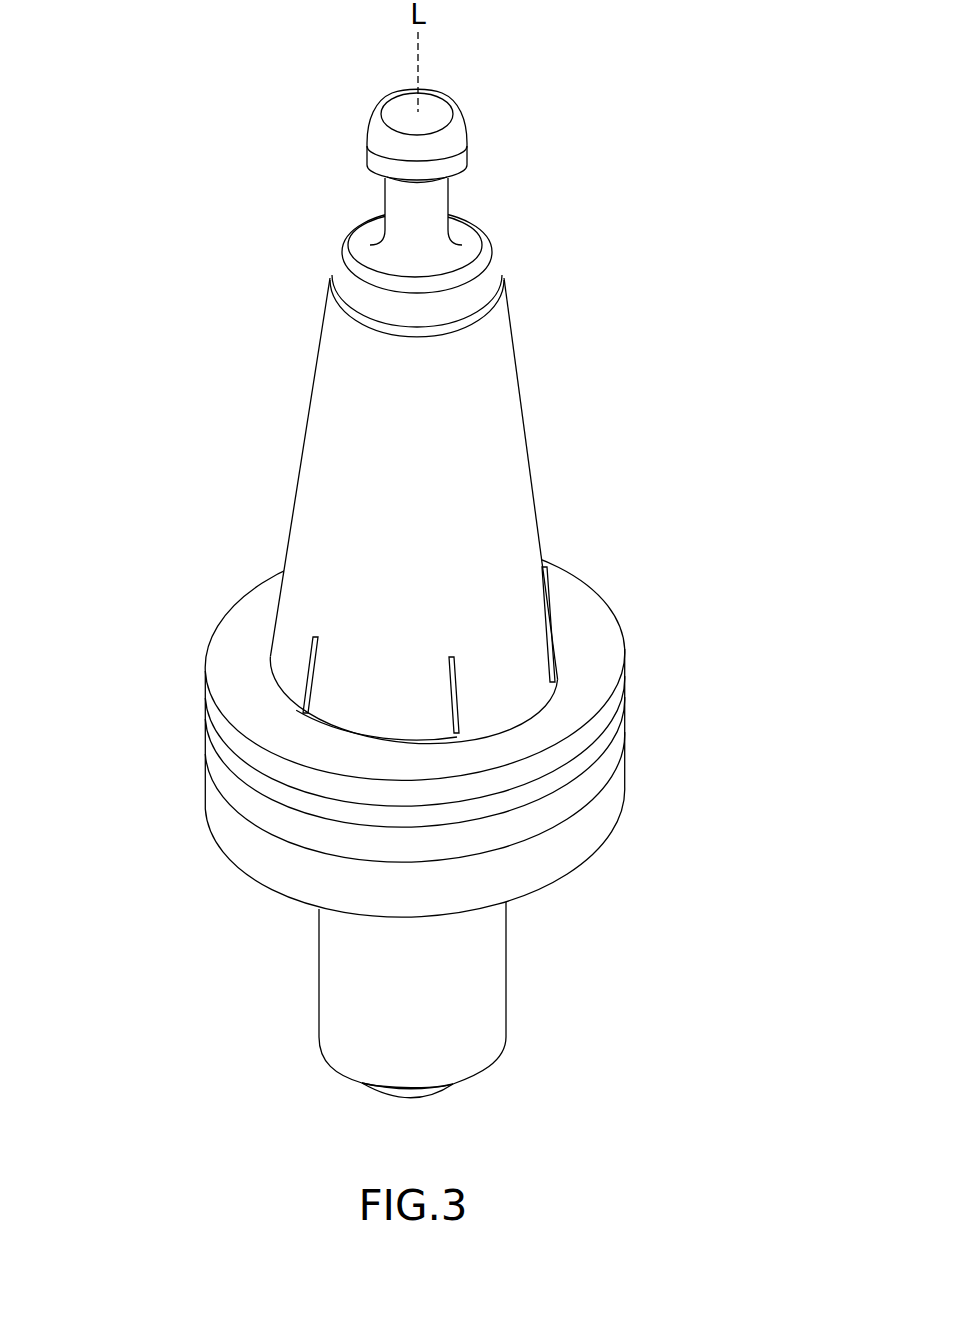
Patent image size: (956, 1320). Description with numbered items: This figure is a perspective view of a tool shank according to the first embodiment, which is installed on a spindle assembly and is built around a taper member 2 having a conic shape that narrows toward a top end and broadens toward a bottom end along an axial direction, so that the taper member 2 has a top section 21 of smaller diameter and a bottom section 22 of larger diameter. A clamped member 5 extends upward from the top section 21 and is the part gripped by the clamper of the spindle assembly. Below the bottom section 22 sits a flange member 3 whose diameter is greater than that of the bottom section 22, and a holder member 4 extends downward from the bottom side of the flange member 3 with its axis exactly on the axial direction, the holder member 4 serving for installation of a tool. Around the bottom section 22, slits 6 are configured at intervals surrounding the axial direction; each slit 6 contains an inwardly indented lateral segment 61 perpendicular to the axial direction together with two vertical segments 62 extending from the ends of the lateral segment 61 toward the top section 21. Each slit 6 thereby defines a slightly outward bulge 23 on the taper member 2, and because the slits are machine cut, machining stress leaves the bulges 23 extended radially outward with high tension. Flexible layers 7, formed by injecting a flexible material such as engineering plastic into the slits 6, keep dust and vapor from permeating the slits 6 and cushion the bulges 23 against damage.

The taper member 2 is at (521, 377).
The top section 21 is at (502, 323).
The bottom section 22 is at (530, 632).
The bulge 23 is at (343, 712).
The flange member 3 is at (630, 668).
The holder member 4 is at (510, 980).
The clamped member 5 is at (470, 106).
The slit 6 is at (313, 636).
The lateral segment 61 is at (367, 737).
The vertical segment 62 is at (312, 671).
The flexible layer 7 is at (554, 638).